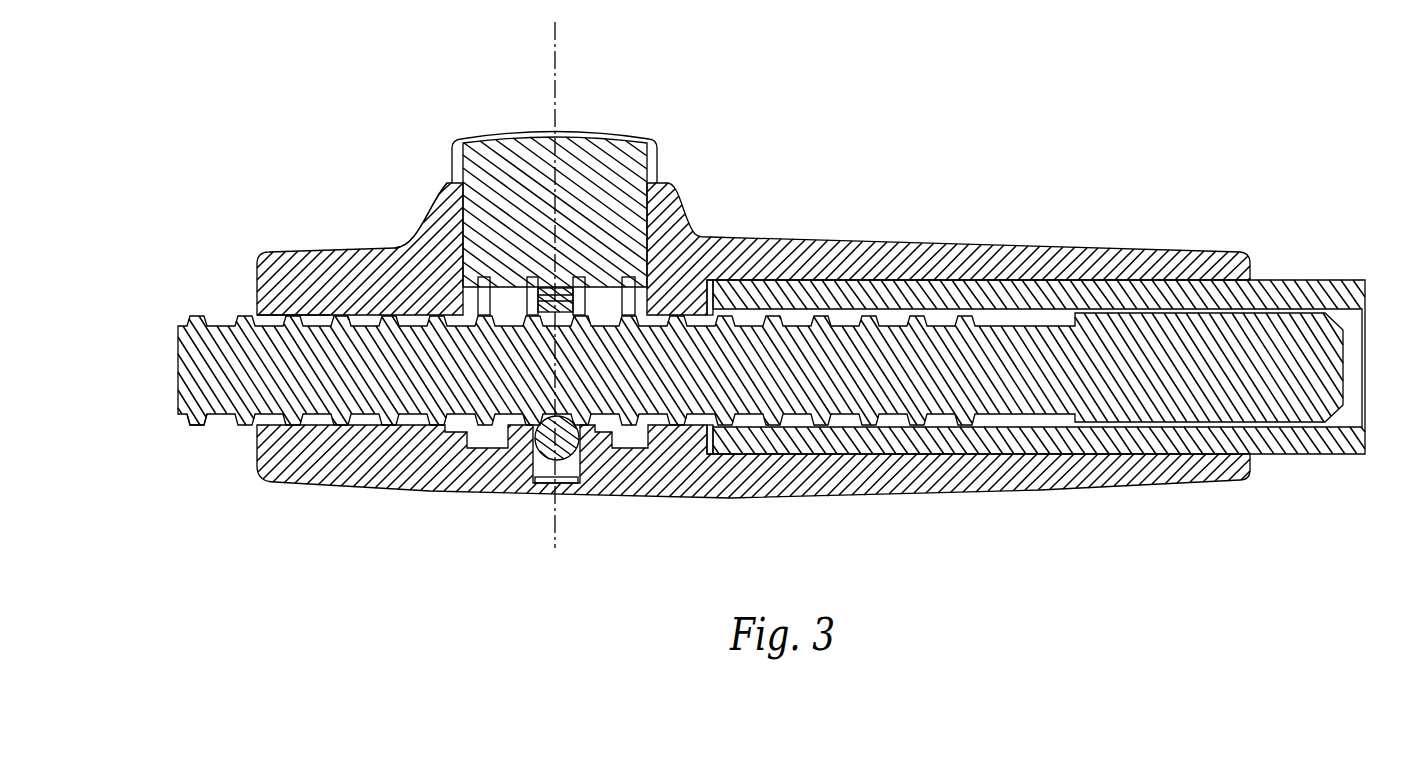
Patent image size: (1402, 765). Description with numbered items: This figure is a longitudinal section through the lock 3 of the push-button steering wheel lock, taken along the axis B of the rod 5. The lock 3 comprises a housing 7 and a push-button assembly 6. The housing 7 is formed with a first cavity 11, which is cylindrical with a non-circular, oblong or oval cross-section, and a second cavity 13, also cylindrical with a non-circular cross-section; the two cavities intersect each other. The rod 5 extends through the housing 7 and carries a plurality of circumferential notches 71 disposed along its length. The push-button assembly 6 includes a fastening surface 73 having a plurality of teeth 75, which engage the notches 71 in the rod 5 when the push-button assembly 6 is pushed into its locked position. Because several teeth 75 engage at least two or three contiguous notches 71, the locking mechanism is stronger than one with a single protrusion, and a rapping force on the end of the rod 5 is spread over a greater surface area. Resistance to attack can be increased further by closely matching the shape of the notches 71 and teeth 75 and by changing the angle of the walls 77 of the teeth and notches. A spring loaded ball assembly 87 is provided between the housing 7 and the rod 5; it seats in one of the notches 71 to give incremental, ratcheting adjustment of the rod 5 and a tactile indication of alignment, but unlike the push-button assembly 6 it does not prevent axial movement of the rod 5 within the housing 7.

The lock 3 is at (818, 238).
The rod 5 is at (178, 370).
The push-button assembly 6 is at (490, 133).
The housing 7 is at (341, 265).
The first cavity 11 is at (424, 240).
The second cavity 13 is at (363, 428).
The circumferential notches 71 is at (268, 314).
The fastening surface 73 is at (614, 281).
The teeth 75 is at (519, 283).
The walls 77 is at (200, 427).
The spring loaded ball assembly 87 is at (588, 452).
The axis B is at (546, 275).